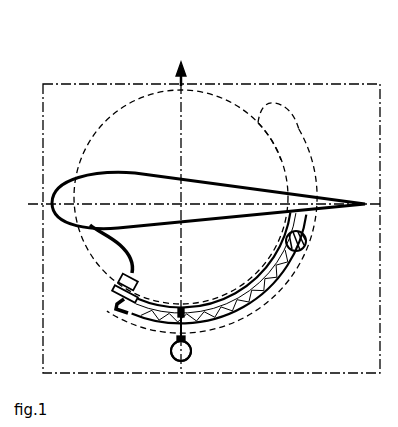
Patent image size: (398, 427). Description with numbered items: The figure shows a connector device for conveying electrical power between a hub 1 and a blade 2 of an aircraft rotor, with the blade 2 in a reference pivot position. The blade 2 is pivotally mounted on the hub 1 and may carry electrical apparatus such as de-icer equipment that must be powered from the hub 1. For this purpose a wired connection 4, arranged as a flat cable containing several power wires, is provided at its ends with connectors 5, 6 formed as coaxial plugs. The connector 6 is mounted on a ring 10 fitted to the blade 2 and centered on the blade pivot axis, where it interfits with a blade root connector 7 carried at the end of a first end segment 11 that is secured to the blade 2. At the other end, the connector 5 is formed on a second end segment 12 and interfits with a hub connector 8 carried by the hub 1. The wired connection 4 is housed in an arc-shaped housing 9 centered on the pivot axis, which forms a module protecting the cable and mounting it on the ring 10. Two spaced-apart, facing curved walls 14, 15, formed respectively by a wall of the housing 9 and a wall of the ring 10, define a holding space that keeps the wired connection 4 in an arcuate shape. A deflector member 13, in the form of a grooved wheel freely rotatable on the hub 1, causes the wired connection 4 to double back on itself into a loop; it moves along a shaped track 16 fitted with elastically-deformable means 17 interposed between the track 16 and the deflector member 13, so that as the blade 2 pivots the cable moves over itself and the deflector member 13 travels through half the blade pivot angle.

The hub 1 is at (318, 369).
The blade 2 is at (120, 173).
The wired connection 4 is at (224, 282).
The connector 5 is at (170, 349).
The hub connector 8 is at (181, 351).
The connector 6 is at (111, 298).
The blade root connector 7 is at (138, 283).
The housing 9 is at (298, 126).
The ring 10 is at (95, 128).
The first end segment 11 is at (118, 253).
The second end segment 12 is at (192, 341).
The deflector member 13 is at (308, 243).
The curved wall 14 is at (318, 155).
The curved wall 15 is at (272, 155).
The shaped track 16 is at (272, 284).
The elastically-deformable means 17 is at (248, 303).